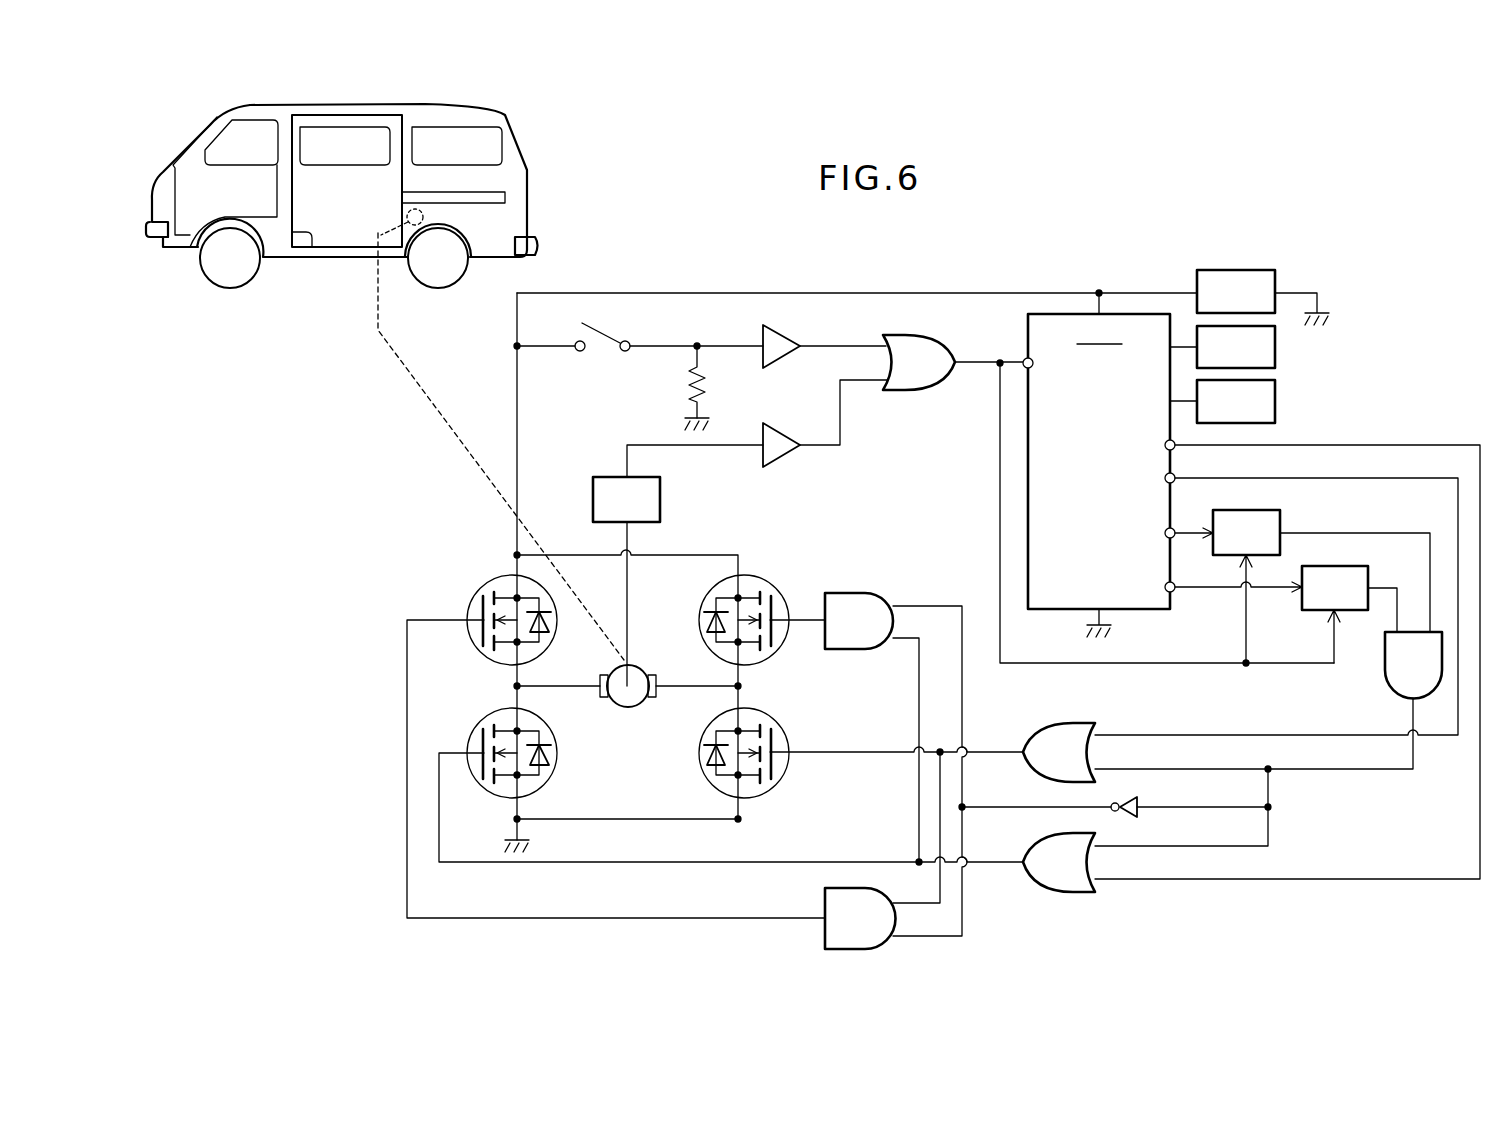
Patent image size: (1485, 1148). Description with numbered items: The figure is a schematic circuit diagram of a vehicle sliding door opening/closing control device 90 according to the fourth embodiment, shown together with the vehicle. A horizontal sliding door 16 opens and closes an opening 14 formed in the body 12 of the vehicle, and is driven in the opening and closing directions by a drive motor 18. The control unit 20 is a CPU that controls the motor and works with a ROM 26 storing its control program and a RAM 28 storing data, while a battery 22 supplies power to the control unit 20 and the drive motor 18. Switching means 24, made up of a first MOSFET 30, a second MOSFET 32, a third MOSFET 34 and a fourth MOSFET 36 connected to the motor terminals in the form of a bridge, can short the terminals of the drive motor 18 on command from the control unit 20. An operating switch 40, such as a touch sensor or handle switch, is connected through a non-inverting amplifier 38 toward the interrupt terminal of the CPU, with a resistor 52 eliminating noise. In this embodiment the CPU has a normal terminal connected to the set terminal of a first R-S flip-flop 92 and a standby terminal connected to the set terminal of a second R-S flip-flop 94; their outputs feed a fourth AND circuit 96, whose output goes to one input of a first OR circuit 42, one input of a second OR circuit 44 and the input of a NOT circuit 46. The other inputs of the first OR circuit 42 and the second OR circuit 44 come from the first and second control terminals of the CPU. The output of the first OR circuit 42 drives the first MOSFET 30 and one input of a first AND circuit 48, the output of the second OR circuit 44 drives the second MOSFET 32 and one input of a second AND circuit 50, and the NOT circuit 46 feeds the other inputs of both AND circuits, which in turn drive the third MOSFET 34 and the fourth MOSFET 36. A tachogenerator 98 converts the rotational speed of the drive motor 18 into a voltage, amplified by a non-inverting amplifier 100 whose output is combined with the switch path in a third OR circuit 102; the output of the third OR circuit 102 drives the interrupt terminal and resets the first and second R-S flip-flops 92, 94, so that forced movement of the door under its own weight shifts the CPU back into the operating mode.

The body 12 is at (188, 215).
The opening 14 is at (307, 243).
The sliding door 16 is at (347, 212).
The drive motor 18 is at (423, 214).
The control unit 20 is at (1028, 330).
The battery 22 is at (1253, 270).
The switching means 24 is at (463, 589).
The ROM 26 is at (1280, 400).
The RAM 28 is at (1280, 346).
The first MOSFET 30 is at (550, 771).
The second MOSFET 32 is at (785, 772).
The third MOSFET 34 is at (777, 648).
The fourth MOSFET 36 is at (485, 656).
The amplifier 38 is at (787, 342).
The operating switch 40 is at (601, 335).
The first OR circuit 42 is at (1070, 893).
The second OR circuit 44 is at (1070, 723).
The NOT circuit 46 is at (1140, 801).
The first AND circuit 48 is at (850, 593).
The second AND circuit 50 is at (825, 904).
The resistor 52 is at (683, 380).
The opening/closing control device 90 is at (800, 265).
The first R-S flip-flop 92 is at (1241, 510).
The second R-S flip-flop 94 is at (1329, 566).
The fourth AND circuit 96 is at (1392, 690).
The tachogenerator 98 is at (593, 501).
The amplifier 100 is at (787, 460).
The third OR circuit 102 is at (935, 392).